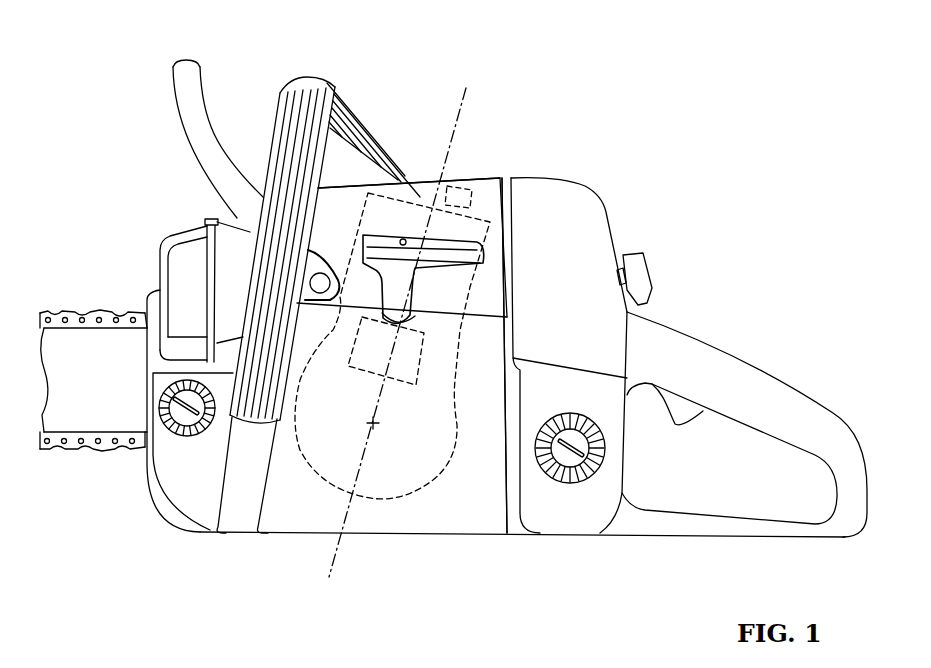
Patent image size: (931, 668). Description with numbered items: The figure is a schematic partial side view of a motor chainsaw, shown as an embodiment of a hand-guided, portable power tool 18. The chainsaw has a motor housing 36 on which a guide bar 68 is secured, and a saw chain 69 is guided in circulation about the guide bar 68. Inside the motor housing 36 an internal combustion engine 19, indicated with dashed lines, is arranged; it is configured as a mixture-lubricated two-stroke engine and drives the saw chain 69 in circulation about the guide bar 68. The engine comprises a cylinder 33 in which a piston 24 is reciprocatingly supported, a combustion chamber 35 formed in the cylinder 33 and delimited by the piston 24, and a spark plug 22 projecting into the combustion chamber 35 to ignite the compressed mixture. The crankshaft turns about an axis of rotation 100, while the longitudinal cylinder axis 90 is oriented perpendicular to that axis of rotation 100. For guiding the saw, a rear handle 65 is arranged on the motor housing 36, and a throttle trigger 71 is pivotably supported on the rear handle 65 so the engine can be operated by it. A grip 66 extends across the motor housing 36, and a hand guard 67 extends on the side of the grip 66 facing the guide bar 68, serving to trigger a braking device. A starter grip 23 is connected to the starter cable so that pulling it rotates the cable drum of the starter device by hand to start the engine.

The power tool 18 is at (645, 105).
The internal combustion engine 19 is at (351, 289).
The spark plug 22 is at (453, 197).
The starter grip 23 is at (401, 262).
The piston 24 is at (430, 340).
The cylinder 33 is at (508, 230).
The combustion chamber 35 is at (480, 237).
The motor housing 36 is at (477, 222).
The rear handle 65 is at (762, 395).
The grip 66 is at (308, 77).
The hand guard 67 is at (190, 90).
The guide bar 68 is at (78, 378).
The saw chain 69 is at (118, 310).
The throttle trigger 71 is at (685, 407).
The longitudinal cylinder axis 90 is at (333, 548).
The axis of rotation 100 is at (373, 423).